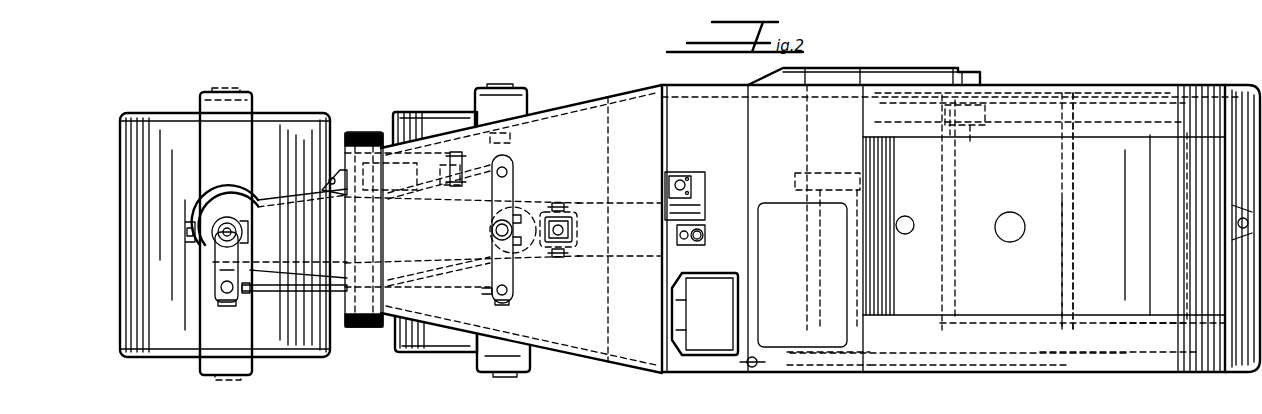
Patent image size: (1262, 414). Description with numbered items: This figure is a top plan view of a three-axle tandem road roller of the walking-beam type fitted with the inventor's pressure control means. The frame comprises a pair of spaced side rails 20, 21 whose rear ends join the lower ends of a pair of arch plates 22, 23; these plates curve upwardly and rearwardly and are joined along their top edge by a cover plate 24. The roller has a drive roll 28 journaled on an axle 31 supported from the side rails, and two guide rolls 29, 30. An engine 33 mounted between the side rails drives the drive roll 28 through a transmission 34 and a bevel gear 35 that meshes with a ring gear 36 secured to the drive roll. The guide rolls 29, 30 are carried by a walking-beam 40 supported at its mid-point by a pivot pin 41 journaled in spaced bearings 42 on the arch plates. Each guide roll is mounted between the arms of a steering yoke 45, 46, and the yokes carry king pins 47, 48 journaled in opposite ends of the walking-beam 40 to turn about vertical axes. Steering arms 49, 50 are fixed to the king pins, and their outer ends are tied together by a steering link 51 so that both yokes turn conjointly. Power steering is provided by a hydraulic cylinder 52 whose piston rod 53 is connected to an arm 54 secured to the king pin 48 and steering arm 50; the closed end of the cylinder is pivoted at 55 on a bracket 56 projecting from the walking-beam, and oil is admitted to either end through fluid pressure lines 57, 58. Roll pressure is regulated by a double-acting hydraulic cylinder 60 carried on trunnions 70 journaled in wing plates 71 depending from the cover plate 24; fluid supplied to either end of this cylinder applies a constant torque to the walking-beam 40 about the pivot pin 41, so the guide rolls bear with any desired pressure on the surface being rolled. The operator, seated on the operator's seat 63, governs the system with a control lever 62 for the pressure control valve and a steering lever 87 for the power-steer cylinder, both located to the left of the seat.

The side rail 20 is at (1120, 362).
The side rail 21 is at (1122, 88).
The arch plate 22 is at (597, 364).
The arch plate 23 is at (590, 96).
The cover plate 24 is at (548, 336).
The drive roll 28 is at (946, 272).
The guide roll 29 is at (153, 120).
The guide roll 30 is at (416, 120).
The axle 31 is at (1075, 287).
The engine 33 is at (806, 257).
The transmission 34 is at (806, 122).
The bevel gear 35 is at (966, 74).
The ring gear 36 is at (972, 128).
The walking-beam 40 is at (285, 198).
The pivot pin 41 is at (383, 232).
The bearings 42 is at (380, 133).
The steering yoke 45 is at (245, 355).
The steering yoke 46 is at (480, 366).
The king pin 47 is at (229, 226).
The king pin 48 is at (512, 205).
The steering arm 49 is at (220, 268).
The steering arm 50 is at (513, 280).
The steering link 51 is at (244, 300).
The hydraulic cylinder 52 is at (436, 198).
The piston rod 53 is at (463, 160).
The arm 54 is at (513, 178).
The pivot 55 is at (348, 135).
The bracket 56 is at (330, 181).
The fluid pressure line 57 is at (452, 130).
The fluid pressure line 58 is at (508, 139).
The double-acting hydraulic cylinder 60 is at (573, 230).
The control lever 62 is at (680, 235).
The operator's seat 63 is at (694, 276).
The trunnions 70 is at (562, 203).
The wing plates 71 is at (613, 201).
The steering lever 87 is at (702, 235).